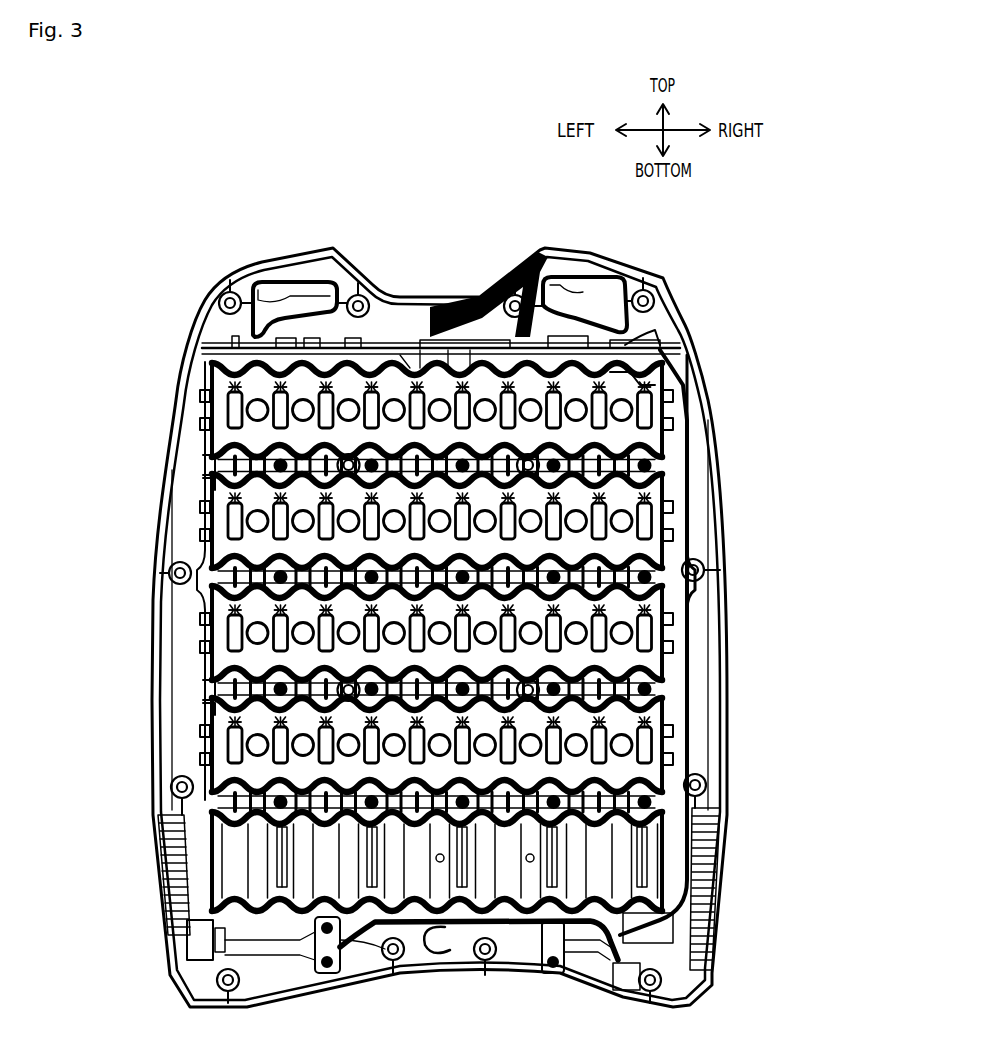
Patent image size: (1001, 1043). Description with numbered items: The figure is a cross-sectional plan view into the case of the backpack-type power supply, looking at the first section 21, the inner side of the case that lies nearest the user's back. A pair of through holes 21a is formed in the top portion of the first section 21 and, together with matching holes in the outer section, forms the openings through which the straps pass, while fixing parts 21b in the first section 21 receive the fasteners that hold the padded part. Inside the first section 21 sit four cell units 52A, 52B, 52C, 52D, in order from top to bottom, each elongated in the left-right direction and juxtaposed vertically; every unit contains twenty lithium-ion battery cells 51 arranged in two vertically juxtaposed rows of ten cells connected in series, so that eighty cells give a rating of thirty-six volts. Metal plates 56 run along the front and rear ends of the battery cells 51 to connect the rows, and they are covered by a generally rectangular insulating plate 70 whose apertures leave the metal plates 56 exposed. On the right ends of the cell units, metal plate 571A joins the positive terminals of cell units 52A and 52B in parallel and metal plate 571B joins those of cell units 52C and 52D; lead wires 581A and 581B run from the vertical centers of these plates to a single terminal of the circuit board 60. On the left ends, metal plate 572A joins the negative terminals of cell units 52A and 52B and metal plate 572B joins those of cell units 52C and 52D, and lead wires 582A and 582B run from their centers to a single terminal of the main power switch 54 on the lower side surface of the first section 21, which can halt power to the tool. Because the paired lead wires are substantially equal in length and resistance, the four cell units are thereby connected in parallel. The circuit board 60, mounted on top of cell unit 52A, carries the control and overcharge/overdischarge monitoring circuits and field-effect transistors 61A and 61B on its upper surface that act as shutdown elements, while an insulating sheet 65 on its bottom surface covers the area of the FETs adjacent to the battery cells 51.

The first section 21 is at (252, 262).
The through holes 21a is at (232, 270).
The fixing parts 21b is at (462, 340).
The battery cells 51 is at (405, 360).
The cell unit 52A is at (672, 398).
The cell unit 52B is at (680, 520).
The cell unit 52C is at (682, 617).
The cell unit 52D is at (662, 752).
The main power switch 54 is at (175, 937).
The metal plates 56 is at (627, 385).
The circuit board 60 is at (645, 330).
The field-effect transistor 61A is at (296, 338).
The field-effect transistor 61B is at (328, 348).
The insulating sheet 65 is at (223, 347).
The insulating plate 70 is at (660, 348).
The metal plate 571A is at (660, 477).
The metal plate 571B is at (665, 715).
The metal plate 572A is at (205, 458).
The metal plate 572B is at (207, 690).
The lead wire 581A is at (673, 450).
The lead wire 581B is at (668, 683).
The lead wire 582A is at (205, 485).
The lead wire 582B is at (200, 700).